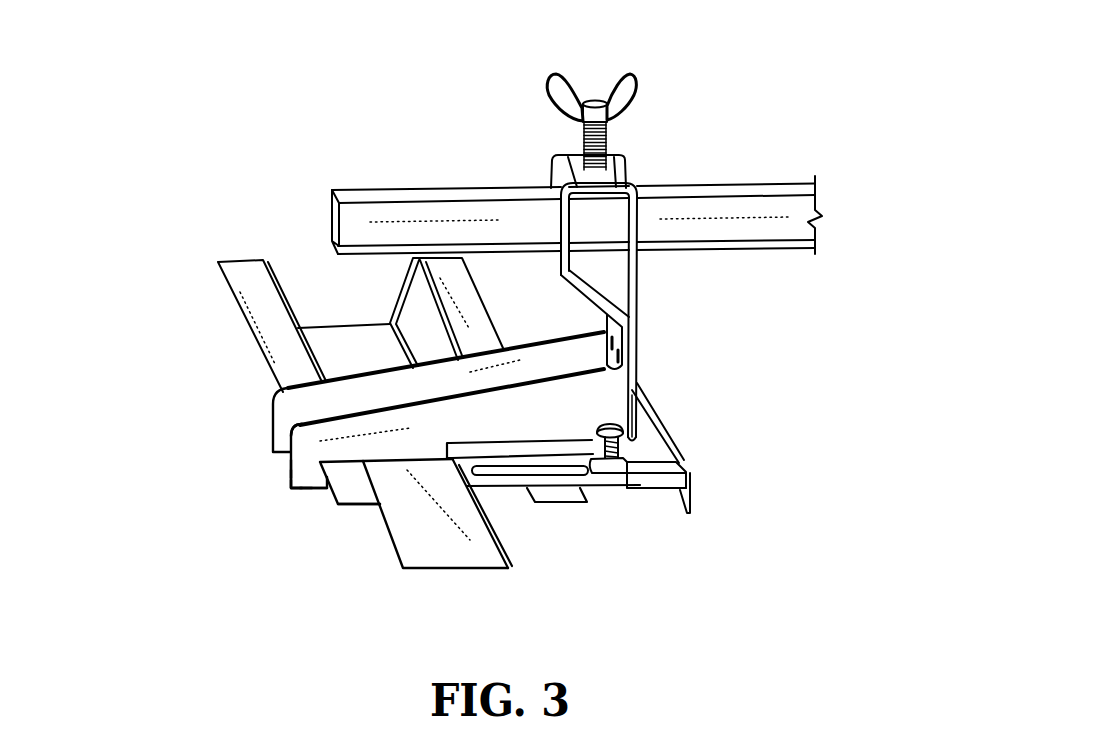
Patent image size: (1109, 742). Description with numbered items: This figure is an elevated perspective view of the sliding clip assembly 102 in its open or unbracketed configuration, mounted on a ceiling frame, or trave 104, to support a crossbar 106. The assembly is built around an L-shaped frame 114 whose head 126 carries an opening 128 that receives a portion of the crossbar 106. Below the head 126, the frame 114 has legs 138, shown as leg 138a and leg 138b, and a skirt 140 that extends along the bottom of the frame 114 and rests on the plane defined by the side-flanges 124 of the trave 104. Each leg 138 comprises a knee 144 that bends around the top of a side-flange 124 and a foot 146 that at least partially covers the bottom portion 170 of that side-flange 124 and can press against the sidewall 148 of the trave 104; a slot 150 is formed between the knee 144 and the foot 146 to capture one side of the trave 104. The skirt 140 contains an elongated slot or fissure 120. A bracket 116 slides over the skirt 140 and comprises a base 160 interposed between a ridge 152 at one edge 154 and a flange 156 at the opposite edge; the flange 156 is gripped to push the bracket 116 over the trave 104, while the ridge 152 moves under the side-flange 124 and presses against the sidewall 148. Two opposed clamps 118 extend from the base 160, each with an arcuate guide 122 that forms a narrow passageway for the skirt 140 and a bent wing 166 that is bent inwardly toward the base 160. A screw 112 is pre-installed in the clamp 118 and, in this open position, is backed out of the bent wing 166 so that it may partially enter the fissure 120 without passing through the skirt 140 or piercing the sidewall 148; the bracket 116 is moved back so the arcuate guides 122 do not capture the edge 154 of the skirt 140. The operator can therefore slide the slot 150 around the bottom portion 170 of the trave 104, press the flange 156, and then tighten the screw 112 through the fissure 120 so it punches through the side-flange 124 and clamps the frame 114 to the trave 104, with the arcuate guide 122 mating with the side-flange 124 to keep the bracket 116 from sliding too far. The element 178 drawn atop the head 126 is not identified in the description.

The sliding clip assembly 102 is at (270, 180).
The trave 104 is at (427, 557).
The crossbar 106 is at (372, 208).
The screw 112 is at (615, 426).
The frame 114 is at (637, 308).
The bracket 116 is at (670, 443).
The clamp 118 is at (647, 503).
The fissure 120 is at (553, 478).
The arcuate guide 122 is at (697, 483).
The side-flange 124 is at (355, 505).
The head 126 is at (550, 187).
The opening 128 is at (655, 182).
The leg 138 is at (273, 422).
The leg 138a is at (300, 472).
The leg 138b is at (291, 447).
The skirt 140 is at (512, 488).
The knee 144 is at (285, 410).
The foot 146 is at (307, 490).
The sidewall 148 is at (391, 519).
The slot 150 is at (299, 472).
The ridge 152 is at (592, 488).
The edge 154 is at (514, 488).
The flange 156 is at (690, 500).
The base 160 is at (643, 434).
The bent wing 166 is at (640, 492).
The bottom portion 170 is at (313, 492).
The wing nut 178 is at (628, 95).